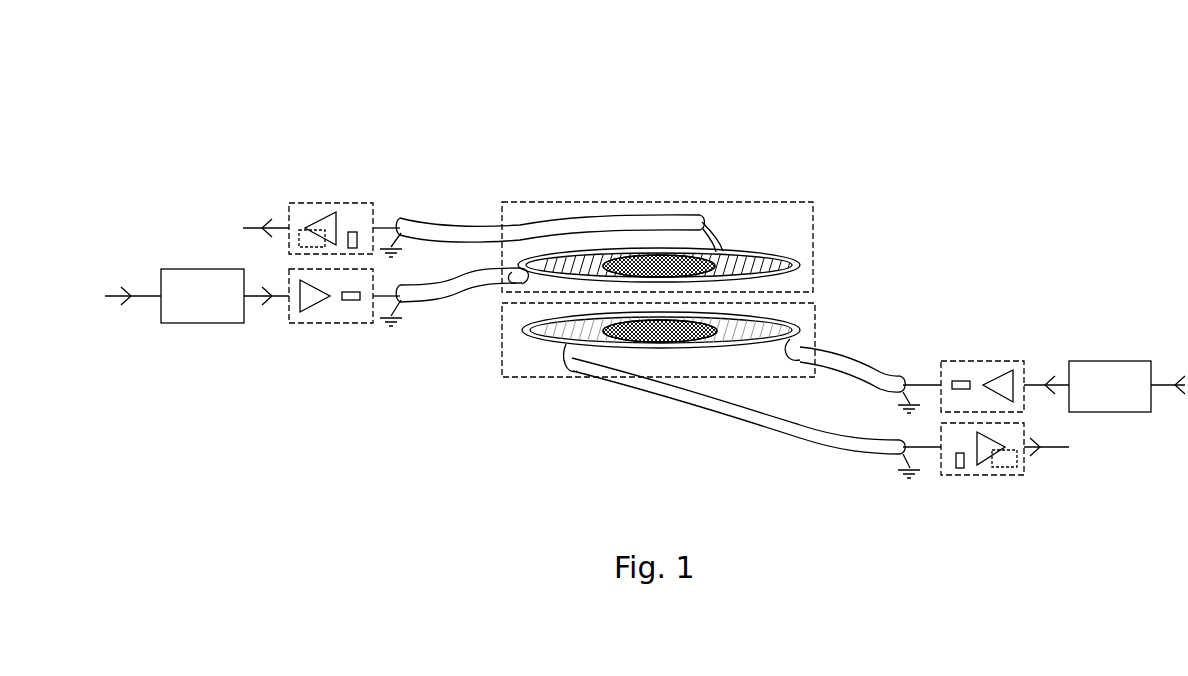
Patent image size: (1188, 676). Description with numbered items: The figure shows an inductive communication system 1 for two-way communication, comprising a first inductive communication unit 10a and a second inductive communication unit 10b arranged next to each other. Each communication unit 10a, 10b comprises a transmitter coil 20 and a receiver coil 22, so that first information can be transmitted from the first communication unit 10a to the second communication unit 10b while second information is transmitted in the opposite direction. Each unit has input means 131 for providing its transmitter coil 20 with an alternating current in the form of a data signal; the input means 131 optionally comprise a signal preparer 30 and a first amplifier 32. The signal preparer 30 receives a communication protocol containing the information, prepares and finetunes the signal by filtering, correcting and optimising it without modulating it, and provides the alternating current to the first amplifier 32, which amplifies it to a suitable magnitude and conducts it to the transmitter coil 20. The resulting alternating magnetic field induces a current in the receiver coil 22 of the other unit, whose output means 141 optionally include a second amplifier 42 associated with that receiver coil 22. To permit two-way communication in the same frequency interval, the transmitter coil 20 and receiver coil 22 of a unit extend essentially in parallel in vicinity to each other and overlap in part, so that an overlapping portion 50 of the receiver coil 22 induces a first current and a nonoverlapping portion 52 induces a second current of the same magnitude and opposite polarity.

The inductive communication system 1 is at (243, 96).
The first inductive communication unit 10a is at (942, 187).
The second inductive communication unit 10b is at (435, 423).
The transmitter coil 20 is at (537, 249).
The receiver coil 22 is at (806, 258).
The first signal preparer 30 is at (200, 303).
The first amplifier 32 is at (341, 312).
The second amplifier 42 is at (355, 204).
The overlapping portion 50 is at (647, 258).
The nonoverlapping portion 52 is at (574, 262).
The input means 131 is at (277, 334).
The output means 141 is at (273, 196).